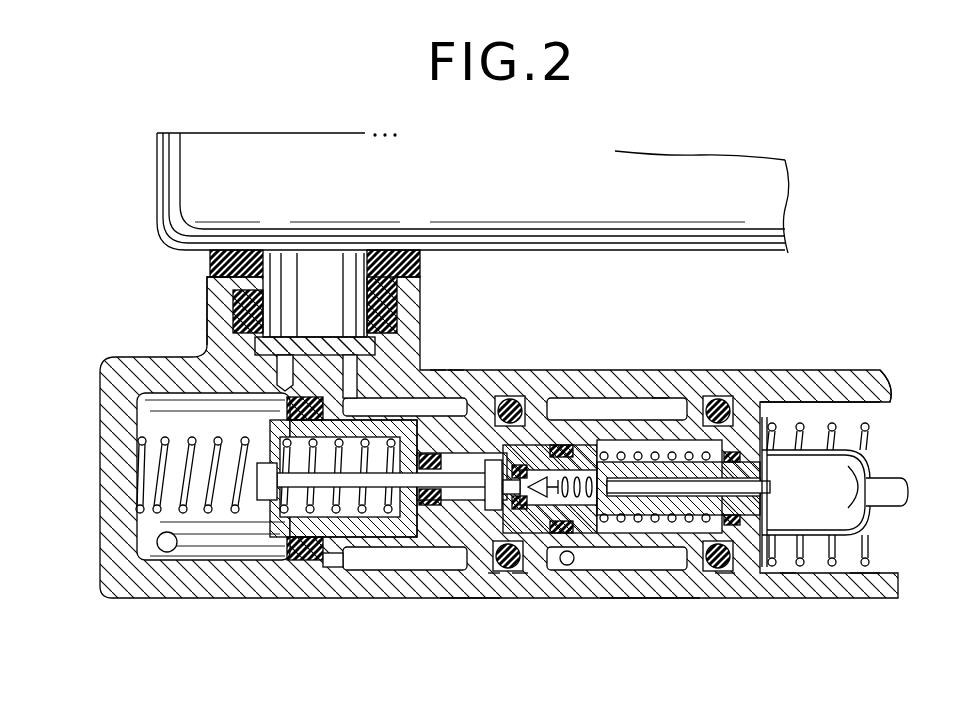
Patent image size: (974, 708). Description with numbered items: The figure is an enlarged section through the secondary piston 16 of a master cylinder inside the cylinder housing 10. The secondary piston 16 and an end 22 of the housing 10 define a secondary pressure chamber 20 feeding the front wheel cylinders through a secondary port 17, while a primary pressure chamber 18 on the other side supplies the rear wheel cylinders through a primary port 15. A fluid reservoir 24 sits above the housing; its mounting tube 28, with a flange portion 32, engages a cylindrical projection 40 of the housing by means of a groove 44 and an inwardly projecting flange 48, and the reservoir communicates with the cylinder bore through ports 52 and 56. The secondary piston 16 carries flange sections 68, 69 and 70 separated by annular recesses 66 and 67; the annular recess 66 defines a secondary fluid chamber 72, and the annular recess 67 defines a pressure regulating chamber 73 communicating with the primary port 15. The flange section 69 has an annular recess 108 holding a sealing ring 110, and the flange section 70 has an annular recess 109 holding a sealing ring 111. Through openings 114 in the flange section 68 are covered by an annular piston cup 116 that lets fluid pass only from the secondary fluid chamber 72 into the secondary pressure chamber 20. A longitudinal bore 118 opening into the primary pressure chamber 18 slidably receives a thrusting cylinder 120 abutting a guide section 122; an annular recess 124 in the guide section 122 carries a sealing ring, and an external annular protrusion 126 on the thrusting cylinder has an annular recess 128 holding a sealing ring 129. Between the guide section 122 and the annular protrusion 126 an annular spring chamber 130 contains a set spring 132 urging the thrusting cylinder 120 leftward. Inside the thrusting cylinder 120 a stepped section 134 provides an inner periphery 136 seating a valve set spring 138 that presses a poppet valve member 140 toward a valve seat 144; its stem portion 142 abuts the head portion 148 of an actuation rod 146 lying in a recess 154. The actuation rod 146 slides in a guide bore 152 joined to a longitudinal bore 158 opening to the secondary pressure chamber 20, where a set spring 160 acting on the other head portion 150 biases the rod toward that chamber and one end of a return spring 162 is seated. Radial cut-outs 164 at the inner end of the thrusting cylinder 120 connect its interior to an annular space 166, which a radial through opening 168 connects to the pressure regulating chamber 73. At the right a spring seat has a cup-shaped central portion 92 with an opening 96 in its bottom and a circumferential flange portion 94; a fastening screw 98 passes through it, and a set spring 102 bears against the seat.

The cylinder housing 10 is at (640, 590).
The primary port 15 is at (567, 566).
The secondary piston 16 is at (470, 560).
The secondary port 17 is at (167, 549).
The primary pressure chamber 18 is at (855, 575).
The secondary pressure chamber 20 is at (150, 522).
The end of the housing 22 is at (103, 458).
The fluid reservoir 24 is at (521, 207).
The mounting tube 28 is at (268, 268).
The flange portion 32 is at (240, 326).
The cylindrical projection 40 is at (208, 308).
The groove 44 is at (233, 300).
The inwardly projecting flange 48 is at (242, 273).
The port 52 is at (349, 388).
The port 56 is at (284, 362).
The annular recess 66 is at (452, 395).
The annular recess 67 is at (660, 410).
The flange section 68 is at (336, 566).
The flange section 69 is at (520, 573).
The flange section 70 is at (725, 575).
The secondary fluid chamber 72 is at (437, 395).
The pressure regulating chamber 73 is at (660, 398).
The cup-shaped central portion 92 is at (872, 462).
The circumferential flange portion 94 is at (788, 575).
The opening 96 is at (880, 412).
The fastening screw 98 is at (908, 495).
The set spring 102 is at (897, 543).
The annular recess 108 is at (508, 572).
The annular recess 109 is at (712, 398).
The sealing ring 110 is at (508, 395).
The sealing ring 111 is at (730, 400).
The through openings 114 is at (331, 397).
The annular piston cup 116 is at (303, 561).
The longitudinal bore 118 is at (660, 560).
The thrusting cylinder 120 is at (685, 462).
The guide section 122 is at (800, 445).
The annular recess 124 is at (770, 398).
The external annular protrusion 126 is at (830, 344).
The annular recess 128 is at (548, 540).
The sealing ring 129 is at (600, 440).
The annular spring chamber 130 is at (660, 546).
The set spring 132 is at (698, 575).
The stepped section 134 is at (630, 452).
The inner periphery 136 is at (552, 572).
The valve set spring 138 is at (835, 493).
The poppet valve member 140 is at (500, 470).
The stem portion 142 is at (497, 547).
The valve seat 144 is at (548, 447).
The actuation rod 146 is at (297, 521).
The head portion 148 is at (353, 408).
The head portion 150 is at (263, 482).
The guide bore 152 is at (445, 560).
The recess 154 is at (487, 455).
The longitudinal bore 158 is at (350, 560).
The set spring 160 is at (356, 517).
The return spring 162 is at (197, 467).
The cut-outs 164 is at (493, 572).
The annular space 166 is at (507, 445).
The through opening 168 is at (592, 535).